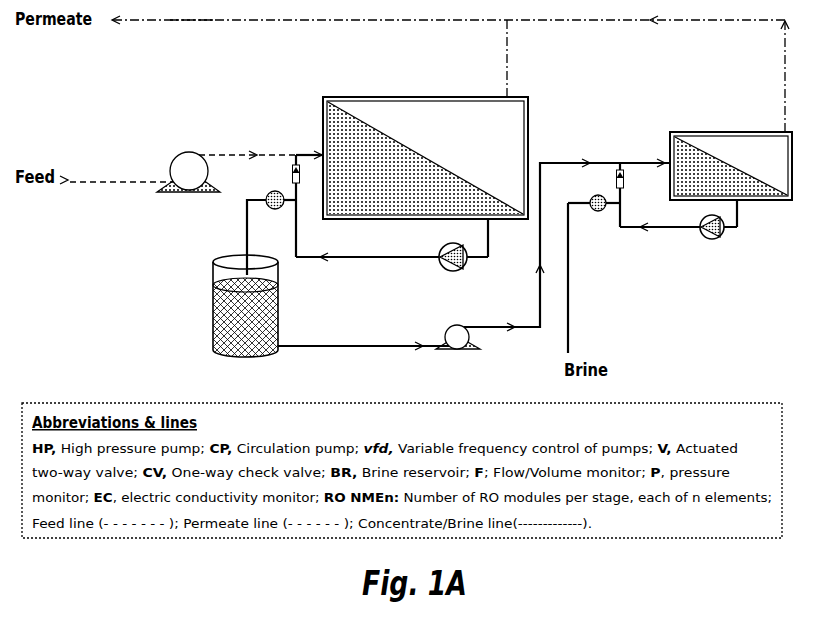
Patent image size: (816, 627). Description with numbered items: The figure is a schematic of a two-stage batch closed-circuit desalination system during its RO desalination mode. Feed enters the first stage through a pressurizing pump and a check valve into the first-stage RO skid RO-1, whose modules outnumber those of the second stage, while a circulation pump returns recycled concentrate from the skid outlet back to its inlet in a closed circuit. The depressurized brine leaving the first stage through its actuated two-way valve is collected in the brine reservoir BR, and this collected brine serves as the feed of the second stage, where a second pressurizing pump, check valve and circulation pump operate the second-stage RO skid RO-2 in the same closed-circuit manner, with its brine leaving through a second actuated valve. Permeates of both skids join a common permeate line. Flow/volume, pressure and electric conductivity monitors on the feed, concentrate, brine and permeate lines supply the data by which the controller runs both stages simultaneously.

The brine reservoir BR is at (245, 316).
The first-stage RO skid RO-1 is at (416, 148).
The second-stage RO skid RO-2 is at (723, 156).